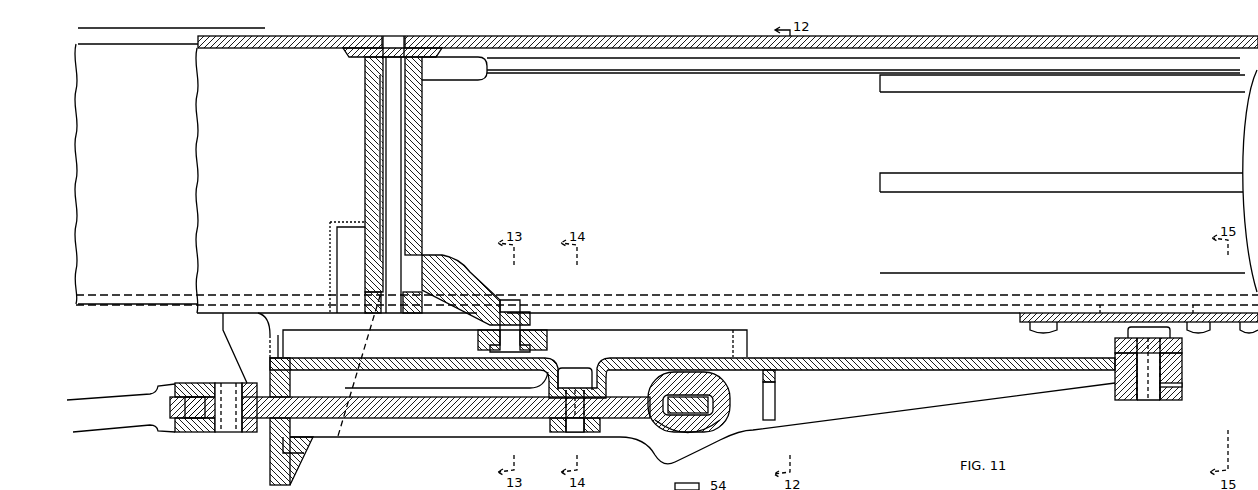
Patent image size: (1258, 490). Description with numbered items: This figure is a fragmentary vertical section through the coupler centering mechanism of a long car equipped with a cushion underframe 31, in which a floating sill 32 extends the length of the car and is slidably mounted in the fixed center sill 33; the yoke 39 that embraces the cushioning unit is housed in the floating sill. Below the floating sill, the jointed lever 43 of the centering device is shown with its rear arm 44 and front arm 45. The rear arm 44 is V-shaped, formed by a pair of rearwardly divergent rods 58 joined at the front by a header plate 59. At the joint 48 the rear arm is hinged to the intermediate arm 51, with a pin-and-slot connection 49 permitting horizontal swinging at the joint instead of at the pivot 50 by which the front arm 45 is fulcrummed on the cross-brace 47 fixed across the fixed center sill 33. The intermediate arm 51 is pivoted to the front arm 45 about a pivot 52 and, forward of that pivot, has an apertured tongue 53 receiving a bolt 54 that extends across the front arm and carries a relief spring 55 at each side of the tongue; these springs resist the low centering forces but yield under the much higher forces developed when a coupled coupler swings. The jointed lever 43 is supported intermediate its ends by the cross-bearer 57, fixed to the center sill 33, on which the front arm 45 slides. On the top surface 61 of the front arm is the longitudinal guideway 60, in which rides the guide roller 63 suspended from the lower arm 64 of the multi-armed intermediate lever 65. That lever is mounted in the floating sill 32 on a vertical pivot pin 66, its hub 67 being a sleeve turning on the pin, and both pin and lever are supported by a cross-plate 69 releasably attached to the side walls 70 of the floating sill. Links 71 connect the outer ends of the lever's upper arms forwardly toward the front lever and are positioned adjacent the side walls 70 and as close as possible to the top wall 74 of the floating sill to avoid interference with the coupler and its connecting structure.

The cushion underframe 31 is at (136, 306).
The floating sill 32 is at (197, 160).
The fixed center sill 33 is at (135, 111).
The yoke 39 is at (1243, 133).
The jointed lever 43 is at (200, 382).
The rear arm 44 is at (106, 397).
The front arm 45 is at (895, 357).
The cross-brace 47 is at (1183, 373).
The joint 48 is at (197, 433).
The pin-and-slot connection 49 is at (226, 433).
The pivot 50 is at (1148, 401).
The intermediate arm 51 is at (463, 397).
The pivot 52 is at (580, 433).
The tongue 53 is at (726, 395).
The bolt 54 is at (714, 408).
The relief spring 55 is at (682, 444).
The cross-bearer 57 is at (306, 465).
The rods 58 is at (104, 434).
The header plate 59 is at (165, 382).
The guideway 60 is at (422, 348).
The top surface 61 is at (648, 357).
The guide roller 63 is at (548, 340).
The lower arm 64 is at (449, 272).
The intermediate lever 65 is at (359, 163).
The pivot pin 66 is at (404, 128).
The hub 67 is at (423, 160).
The cross-plate 69 is at (365, 297).
The side walls 70 is at (682, 178).
The links 71 is at (718, 74).
The top wall 74 is at (278, 48).